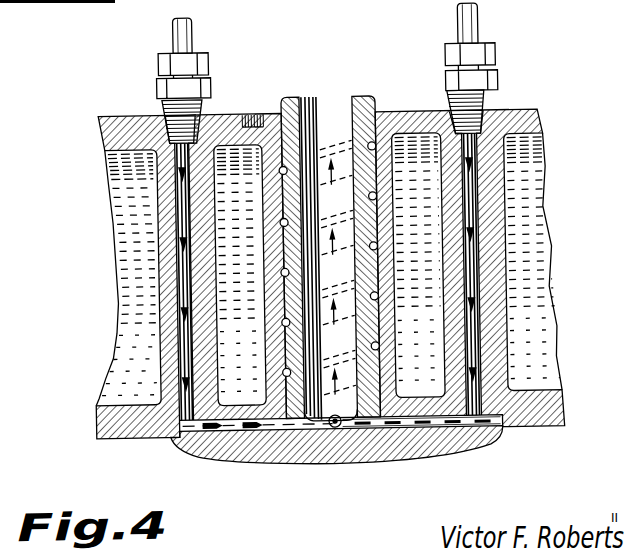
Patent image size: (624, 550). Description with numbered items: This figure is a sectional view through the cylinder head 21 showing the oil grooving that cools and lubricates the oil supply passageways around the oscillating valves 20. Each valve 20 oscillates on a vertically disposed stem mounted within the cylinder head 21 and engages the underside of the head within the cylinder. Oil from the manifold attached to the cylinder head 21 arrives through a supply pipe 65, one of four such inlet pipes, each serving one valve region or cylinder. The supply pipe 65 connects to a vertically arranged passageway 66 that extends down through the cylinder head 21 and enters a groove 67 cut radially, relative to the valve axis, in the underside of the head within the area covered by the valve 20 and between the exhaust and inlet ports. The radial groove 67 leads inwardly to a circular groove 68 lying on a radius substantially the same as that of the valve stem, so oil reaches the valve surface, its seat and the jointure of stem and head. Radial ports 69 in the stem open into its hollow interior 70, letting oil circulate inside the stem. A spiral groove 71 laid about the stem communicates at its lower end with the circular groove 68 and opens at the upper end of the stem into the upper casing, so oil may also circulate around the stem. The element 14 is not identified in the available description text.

The container 14 is at (517, 193).
The valve 20 is at (236, 440).
The cylinder head 21 is at (424, 112).
The supply pipe 65 is at (197, 37).
The vertically arranged passageway 66 is at (203, 141).
The radial groove 67 is at (430, 429).
The circular groove 68 is at (274, 434).
The radial port 69 is at (332, 429).
The hollow interior 70 is at (366, 298).
The spiral groove 71 is at (344, 212).